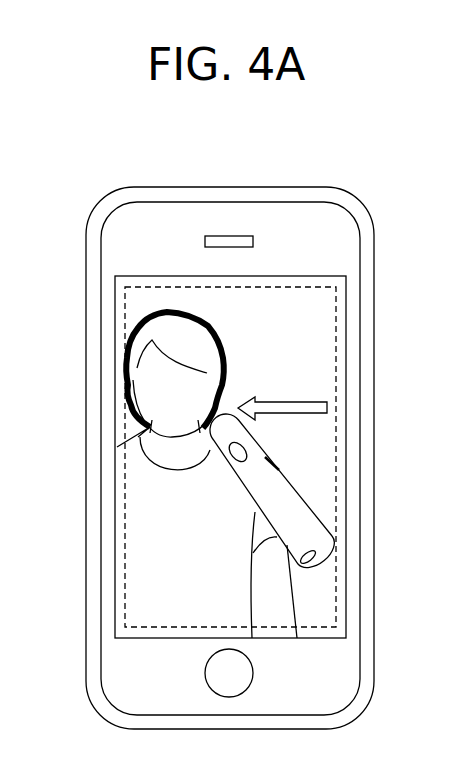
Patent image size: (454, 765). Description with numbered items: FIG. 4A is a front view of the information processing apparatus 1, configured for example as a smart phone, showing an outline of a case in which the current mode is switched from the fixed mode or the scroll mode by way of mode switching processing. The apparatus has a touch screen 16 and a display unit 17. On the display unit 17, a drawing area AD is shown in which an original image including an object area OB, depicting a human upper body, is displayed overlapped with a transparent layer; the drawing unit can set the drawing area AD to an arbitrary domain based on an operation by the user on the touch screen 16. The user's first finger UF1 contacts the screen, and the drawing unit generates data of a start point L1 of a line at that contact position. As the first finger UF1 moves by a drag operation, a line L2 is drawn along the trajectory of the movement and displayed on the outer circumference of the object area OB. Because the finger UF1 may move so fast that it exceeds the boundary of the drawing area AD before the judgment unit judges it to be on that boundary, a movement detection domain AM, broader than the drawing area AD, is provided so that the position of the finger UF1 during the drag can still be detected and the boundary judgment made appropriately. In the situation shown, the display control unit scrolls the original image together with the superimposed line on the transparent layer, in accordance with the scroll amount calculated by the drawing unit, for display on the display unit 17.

The information processing apparatus 1 is at (85, 160).
The touch screen 16 is at (346, 298).
The display unit 17 is at (114, 298).
The movement detection domain AM is at (340, 350).
The drawing area AD is at (125, 343).
The line L2 is at (126, 383).
The start point L1 is at (147, 431).
The first finger UF1 is at (295, 518).
The object area OB is at (280, 587).